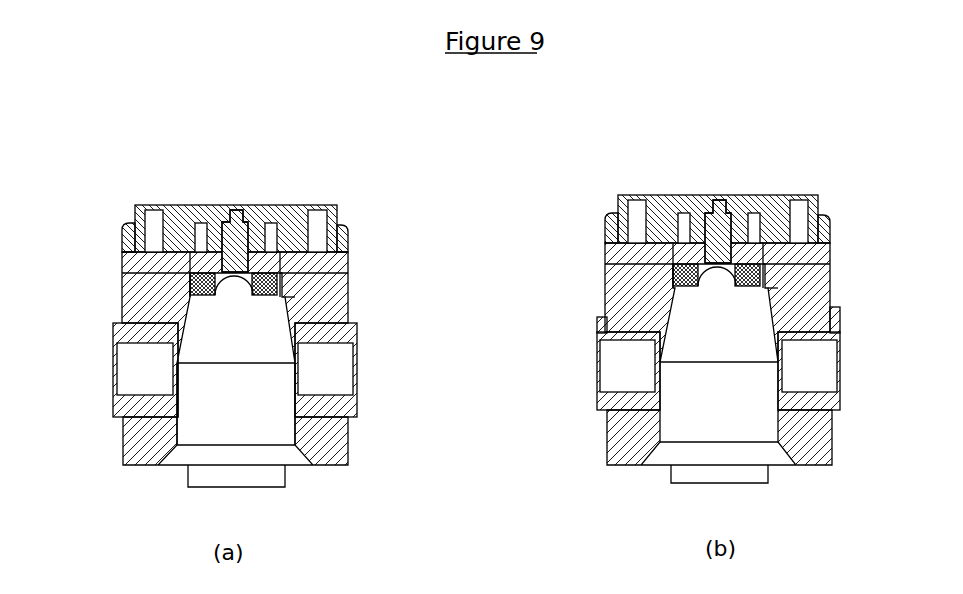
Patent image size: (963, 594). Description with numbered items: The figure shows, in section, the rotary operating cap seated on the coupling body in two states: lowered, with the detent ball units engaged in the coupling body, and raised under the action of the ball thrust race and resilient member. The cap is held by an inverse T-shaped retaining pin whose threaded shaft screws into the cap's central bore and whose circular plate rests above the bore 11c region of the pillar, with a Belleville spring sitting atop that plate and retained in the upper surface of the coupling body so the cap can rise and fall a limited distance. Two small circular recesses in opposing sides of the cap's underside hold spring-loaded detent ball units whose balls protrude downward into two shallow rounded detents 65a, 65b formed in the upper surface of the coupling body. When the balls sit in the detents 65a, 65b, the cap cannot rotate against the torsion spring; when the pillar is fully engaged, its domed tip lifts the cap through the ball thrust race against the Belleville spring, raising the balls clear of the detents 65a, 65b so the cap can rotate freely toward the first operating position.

The bore of injector body 11c is at (355, 410).
The shallow rounded detent 65a is at (122, 252).
The shallow rounded detent 65b is at (352, 250).